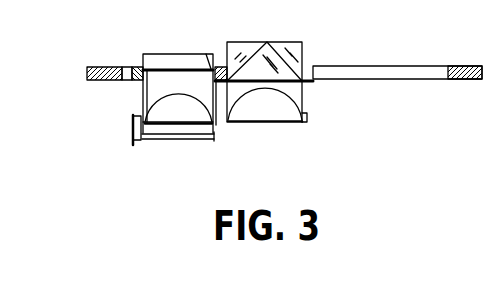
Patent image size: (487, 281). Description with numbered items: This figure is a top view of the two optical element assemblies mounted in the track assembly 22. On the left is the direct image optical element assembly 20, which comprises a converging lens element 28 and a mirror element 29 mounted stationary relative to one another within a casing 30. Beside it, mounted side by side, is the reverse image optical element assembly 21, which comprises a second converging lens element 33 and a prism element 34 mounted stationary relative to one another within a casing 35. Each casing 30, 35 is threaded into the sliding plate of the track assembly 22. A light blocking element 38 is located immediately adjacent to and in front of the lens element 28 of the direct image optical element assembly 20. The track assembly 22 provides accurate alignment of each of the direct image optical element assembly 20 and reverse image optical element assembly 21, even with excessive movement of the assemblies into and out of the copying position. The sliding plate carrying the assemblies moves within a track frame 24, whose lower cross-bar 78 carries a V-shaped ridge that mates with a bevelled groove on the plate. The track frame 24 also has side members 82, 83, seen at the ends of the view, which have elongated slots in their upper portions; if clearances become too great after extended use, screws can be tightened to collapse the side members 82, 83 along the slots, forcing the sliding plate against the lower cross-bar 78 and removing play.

The direct image optical element assembly 20 is at (163, 45).
The reverse image optical element assembly 21 is at (238, 35).
The track assembly 22 is at (397, 59).
The track frame 24 is at (216, 66).
The converging lens element 28 is at (170, 120).
The mirror element 29 is at (206, 53).
The casing 30 is at (143, 99).
The second converging lens element 33 is at (270, 118).
The prism element 34 is at (268, 52).
The casing 35 is at (307, 100).
The light blocking element 38 is at (198, 140).
The lower cross-bar 78 is at (380, 73).
The side member 82 is at (106, 66).
The side member 83 is at (477, 66).